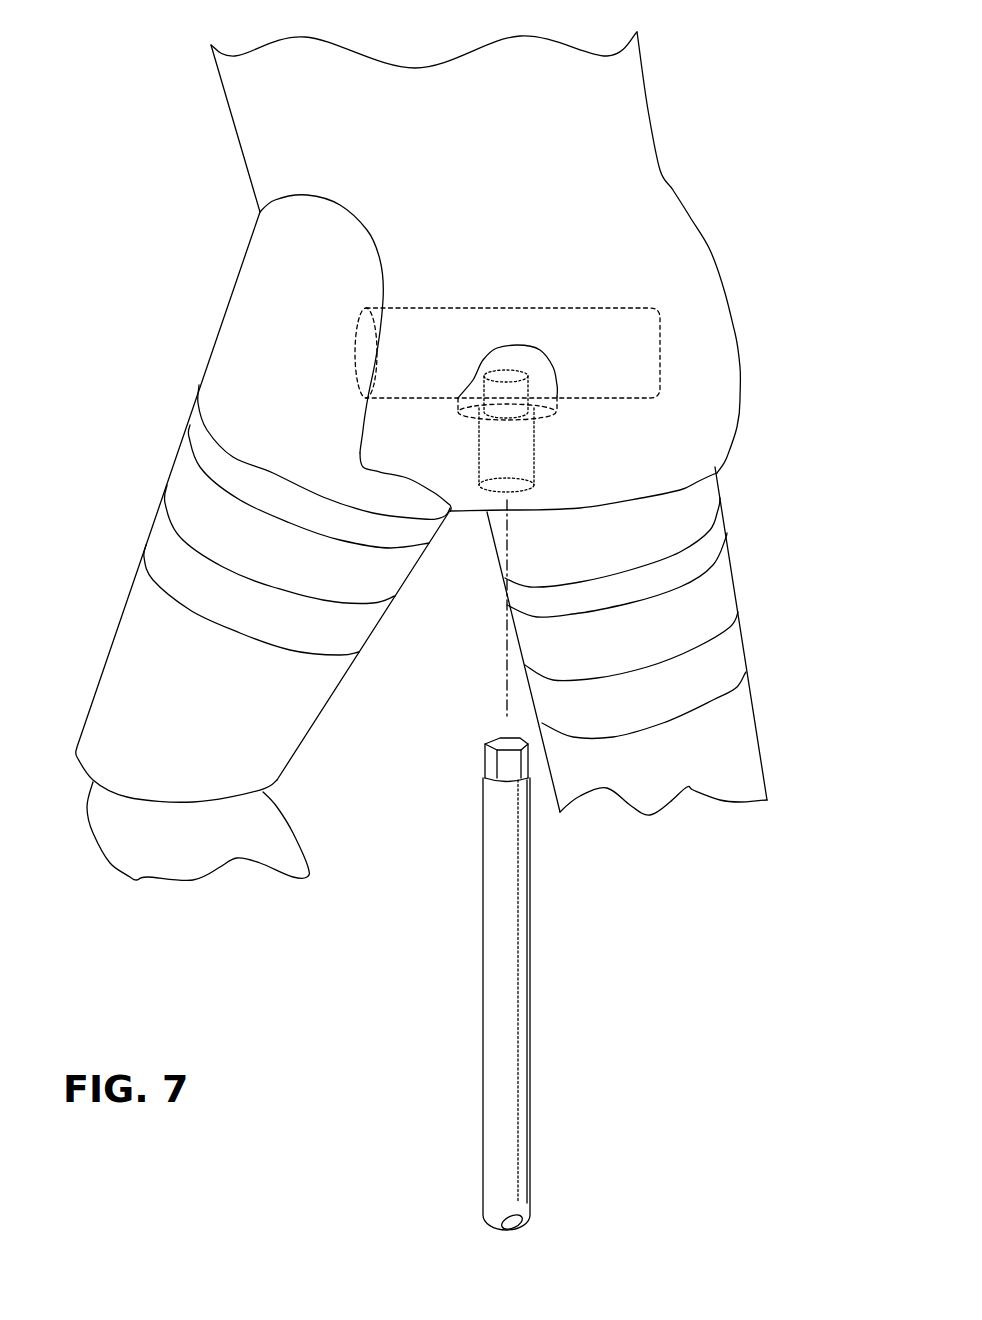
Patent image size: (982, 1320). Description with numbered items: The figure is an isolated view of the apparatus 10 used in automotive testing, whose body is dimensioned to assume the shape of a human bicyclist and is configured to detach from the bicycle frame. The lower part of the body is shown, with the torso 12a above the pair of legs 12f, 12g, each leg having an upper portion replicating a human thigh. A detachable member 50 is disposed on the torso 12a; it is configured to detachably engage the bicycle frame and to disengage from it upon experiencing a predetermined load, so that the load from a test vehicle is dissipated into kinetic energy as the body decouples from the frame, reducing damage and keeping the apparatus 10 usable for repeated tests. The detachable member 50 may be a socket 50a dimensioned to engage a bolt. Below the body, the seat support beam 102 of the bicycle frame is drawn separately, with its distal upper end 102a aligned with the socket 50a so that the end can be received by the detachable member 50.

The apparatus 10 is at (452, 456).
The torso 12a is at (703, 302).
The leg 12g is at (170, 625).
The leg 12f is at (707, 588).
The detachable member 50 is at (553, 418).
The socket 50a is at (513, 423).
The seat support beam 102 is at (515, 985).
The distal upper end 102a is at (490, 762).